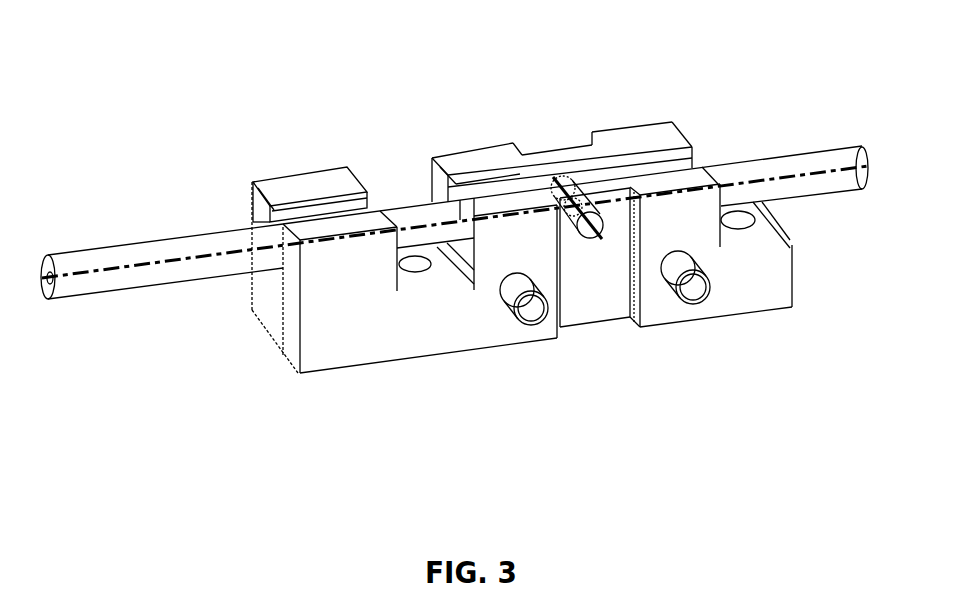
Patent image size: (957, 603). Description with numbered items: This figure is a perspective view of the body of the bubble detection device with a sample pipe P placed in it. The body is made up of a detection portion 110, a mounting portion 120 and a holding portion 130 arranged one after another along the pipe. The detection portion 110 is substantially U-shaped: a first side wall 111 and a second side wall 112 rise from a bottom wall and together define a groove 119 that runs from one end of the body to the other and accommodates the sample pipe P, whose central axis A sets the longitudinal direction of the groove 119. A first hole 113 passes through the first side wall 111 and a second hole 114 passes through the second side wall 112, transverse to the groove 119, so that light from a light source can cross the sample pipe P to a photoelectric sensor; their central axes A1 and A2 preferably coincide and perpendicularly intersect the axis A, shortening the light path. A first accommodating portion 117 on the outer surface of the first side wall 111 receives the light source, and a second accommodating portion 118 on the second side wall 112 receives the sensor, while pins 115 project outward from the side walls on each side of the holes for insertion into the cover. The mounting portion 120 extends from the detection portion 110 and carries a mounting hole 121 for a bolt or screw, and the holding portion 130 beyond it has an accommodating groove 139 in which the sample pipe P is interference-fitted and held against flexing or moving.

The detection portion 110 is at (613, 317).
The first side wall 111 is at (690, 178).
The second side wall 112 is at (654, 140).
The first hole 113 is at (582, 238).
The second hole 114 is at (565, 175).
The pin 115 is at (532, 317).
The first accommodating portion 117 is at (637, 318).
The second accommodating portion 118 is at (572, 135).
The groove 119 is at (470, 192).
The mounting portion 120 is at (437, 327).
The mounting hole 121 is at (413, 272).
The holding portion 130 is at (317, 300).
The accommodating groove 139 is at (298, 215).
The sample pipe P is at (832, 158).
The central axis of the sample pipe A is at (822, 173).
The central axis of the first hole A1 is at (591, 240).
The central axis of the second hole A2 is at (552, 180).